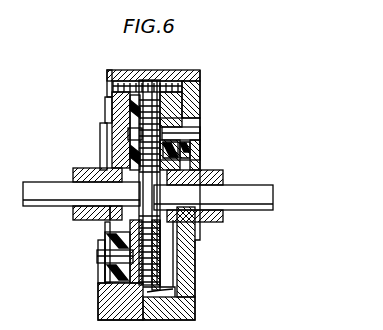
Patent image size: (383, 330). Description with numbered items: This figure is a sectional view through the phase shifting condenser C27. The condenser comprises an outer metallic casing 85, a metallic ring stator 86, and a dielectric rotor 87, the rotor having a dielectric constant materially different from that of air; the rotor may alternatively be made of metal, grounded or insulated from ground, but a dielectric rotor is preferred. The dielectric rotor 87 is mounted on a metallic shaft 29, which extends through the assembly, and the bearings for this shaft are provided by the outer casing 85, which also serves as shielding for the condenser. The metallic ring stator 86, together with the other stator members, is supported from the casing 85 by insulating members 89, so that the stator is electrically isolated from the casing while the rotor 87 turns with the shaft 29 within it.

The phase shifting condenser C27 is at (200, 82).
The outer metallic casing 85 is at (200, 88).
The insulating members 89 is at (108, 112).
The metallic ring stator 86 is at (200, 150).
The metallic shaft 29 is at (250, 192).
The dielectric rotor 87 is at (147, 292).